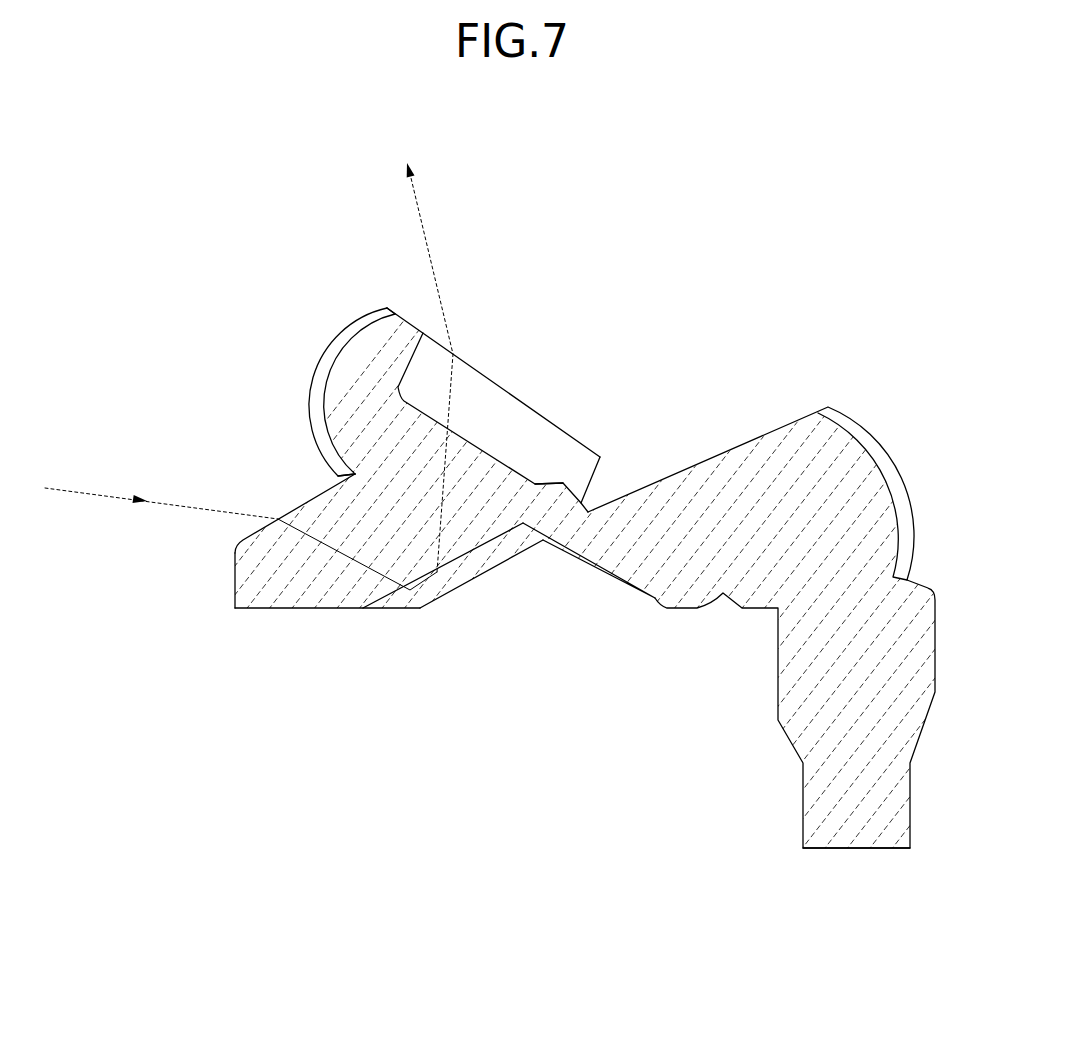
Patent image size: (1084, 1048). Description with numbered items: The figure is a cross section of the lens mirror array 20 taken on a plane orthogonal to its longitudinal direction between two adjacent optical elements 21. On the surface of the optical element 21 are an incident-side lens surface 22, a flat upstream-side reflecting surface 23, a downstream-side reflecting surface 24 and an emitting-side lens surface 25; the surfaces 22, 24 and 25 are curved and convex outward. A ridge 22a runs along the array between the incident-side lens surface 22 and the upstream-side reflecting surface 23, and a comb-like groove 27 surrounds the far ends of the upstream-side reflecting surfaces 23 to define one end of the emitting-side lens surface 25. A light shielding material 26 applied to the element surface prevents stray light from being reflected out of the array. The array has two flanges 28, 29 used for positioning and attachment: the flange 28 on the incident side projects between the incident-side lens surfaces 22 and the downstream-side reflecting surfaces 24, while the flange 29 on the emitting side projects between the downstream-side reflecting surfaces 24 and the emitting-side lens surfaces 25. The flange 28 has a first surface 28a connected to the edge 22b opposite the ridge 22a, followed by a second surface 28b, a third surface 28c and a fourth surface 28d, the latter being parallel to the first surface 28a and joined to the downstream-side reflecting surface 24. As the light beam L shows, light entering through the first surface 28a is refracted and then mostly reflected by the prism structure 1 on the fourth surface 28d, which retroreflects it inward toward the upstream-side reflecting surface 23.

The prism structure 1 is at (392, 633).
The lens mirror array 20 is at (829, 335).
The optical element 21 is at (884, 388).
The incident-side lens surface 22 is at (336, 355).
The ridge 22a is at (389, 306).
The edge 22b is at (334, 469).
The upstream-side reflecting surface 23 is at (515, 397).
The downstream-side reflecting surface 24 is at (602, 575).
The emitting-side lens surface 25 is at (894, 470).
The light shielding material 26 is at (477, 385).
The groove 27 is at (560, 438).
The flange 28 is at (235, 610).
The first surface 28a is at (315, 497).
The second surface 28b is at (233, 577).
The third surface 28c is at (300, 610).
The fourth surface 28d is at (481, 547).
The flange 29 is at (852, 850).
The light beam L is at (425, 233).